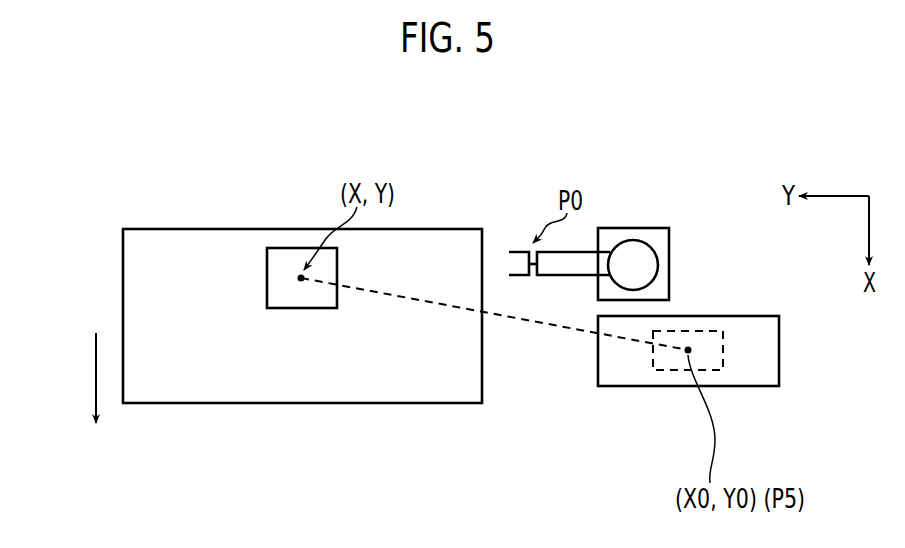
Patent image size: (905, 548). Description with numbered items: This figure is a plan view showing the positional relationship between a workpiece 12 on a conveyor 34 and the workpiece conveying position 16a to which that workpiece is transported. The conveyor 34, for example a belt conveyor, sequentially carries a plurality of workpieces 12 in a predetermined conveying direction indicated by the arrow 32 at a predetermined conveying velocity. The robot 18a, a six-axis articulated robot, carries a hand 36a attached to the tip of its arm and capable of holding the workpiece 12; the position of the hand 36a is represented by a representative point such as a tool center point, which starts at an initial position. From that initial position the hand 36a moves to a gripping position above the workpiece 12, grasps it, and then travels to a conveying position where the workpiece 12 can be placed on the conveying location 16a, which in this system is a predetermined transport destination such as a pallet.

The workpiece 12 is at (283, 248).
The arrow 32 is at (96, 365).
The conveyor 34 is at (441, 403).
The hand 36a is at (515, 252).
The robot 18a is at (633, 212).
The workpiece conveying position 16a is at (740, 386).